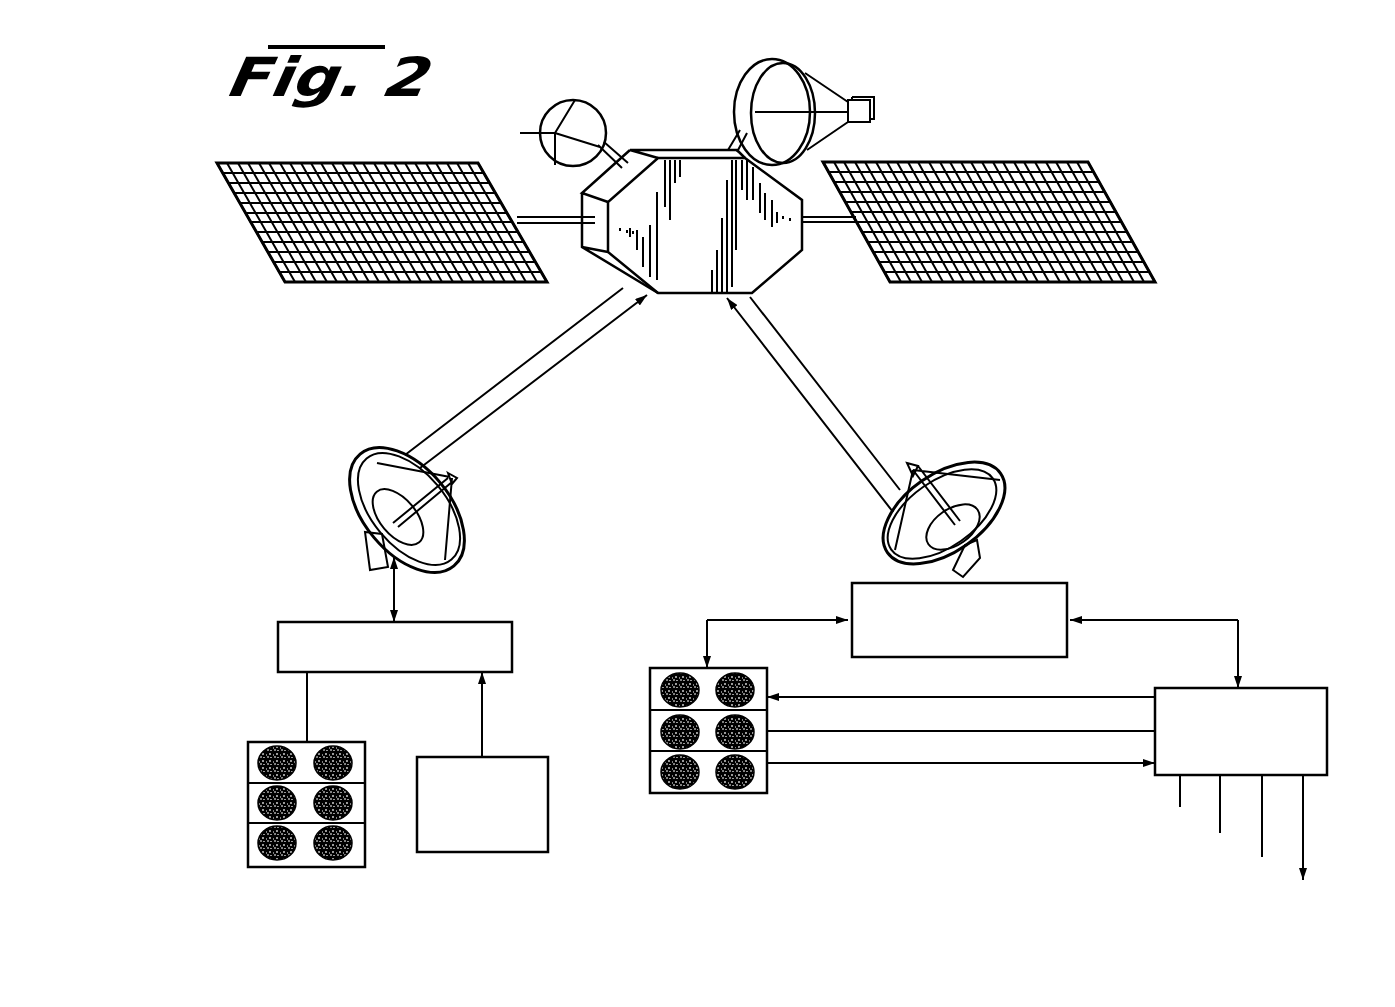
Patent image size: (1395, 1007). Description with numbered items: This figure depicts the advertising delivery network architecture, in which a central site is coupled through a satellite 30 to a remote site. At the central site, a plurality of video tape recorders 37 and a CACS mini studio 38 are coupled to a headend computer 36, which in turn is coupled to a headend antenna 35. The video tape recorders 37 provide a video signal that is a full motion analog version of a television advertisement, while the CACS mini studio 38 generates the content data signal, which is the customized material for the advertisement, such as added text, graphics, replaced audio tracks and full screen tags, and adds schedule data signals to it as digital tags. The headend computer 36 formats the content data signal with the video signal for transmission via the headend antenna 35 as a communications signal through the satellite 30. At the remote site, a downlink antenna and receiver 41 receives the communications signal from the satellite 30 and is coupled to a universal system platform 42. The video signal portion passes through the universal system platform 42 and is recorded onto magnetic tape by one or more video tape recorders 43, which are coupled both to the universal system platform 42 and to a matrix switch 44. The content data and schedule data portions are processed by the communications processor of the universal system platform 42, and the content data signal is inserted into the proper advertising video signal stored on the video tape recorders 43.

The satellite 30 is at (783, 270).
The headend antenna 35 is at (365, 543).
The headend computer 36 is at (277, 643).
The video tape recorders 37 is at (248, 847).
The CACS mini studio 38 is at (485, 853).
The downlink antenna and receiver 41 is at (982, 540).
The universal system platform 42 is at (860, 583).
The video tape recorders 43 is at (648, 768).
The matrix switch 44 is at (1288, 688).